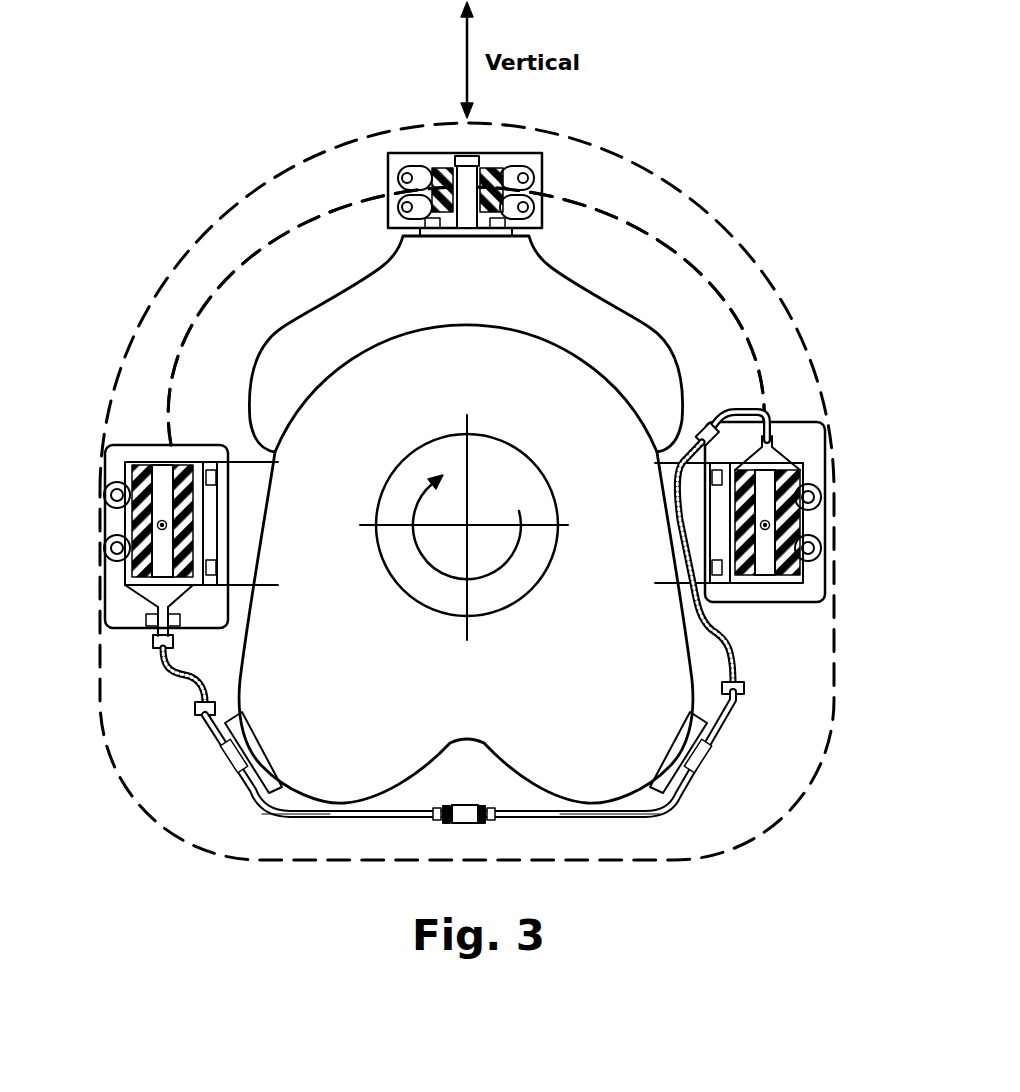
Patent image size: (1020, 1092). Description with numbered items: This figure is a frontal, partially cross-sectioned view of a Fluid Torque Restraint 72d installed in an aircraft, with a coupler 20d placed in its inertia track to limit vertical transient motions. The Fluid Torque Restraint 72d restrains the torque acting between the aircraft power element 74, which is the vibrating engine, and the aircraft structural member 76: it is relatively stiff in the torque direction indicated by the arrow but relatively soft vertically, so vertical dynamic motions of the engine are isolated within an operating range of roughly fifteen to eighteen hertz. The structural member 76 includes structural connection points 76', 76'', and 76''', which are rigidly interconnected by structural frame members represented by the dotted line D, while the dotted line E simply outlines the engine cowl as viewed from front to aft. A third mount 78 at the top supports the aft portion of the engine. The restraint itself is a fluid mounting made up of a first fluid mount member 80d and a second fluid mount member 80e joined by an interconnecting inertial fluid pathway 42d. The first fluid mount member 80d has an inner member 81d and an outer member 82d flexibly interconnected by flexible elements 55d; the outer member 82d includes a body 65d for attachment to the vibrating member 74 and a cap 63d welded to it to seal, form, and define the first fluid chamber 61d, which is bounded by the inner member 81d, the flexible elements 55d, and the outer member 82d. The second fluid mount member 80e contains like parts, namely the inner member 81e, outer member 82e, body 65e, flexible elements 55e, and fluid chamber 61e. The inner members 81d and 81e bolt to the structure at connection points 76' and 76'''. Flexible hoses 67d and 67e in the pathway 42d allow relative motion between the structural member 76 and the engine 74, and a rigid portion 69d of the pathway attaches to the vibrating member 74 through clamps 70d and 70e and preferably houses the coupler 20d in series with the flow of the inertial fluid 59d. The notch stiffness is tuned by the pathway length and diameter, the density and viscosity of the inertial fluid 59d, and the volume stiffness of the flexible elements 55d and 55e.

The coupler 20d is at (503, 829).
The inertial fluid pathway 42d is at (603, 823).
The flexible elements 55d is at (128, 556).
The flexible elements 55e is at (815, 548).
The inertial fluid 59d is at (140, 585).
The first fluid chamber 61d is at (150, 610).
The fluid chamber 61e is at (790, 460).
The cap 63d is at (135, 598).
The body 65d is at (132, 520).
The body 65e is at (805, 520).
The flexible hose 67d is at (175, 678).
The flexible hose 67e is at (738, 655).
The rigid portion 69d is at (418, 822).
The clamp 70d is at (232, 768).
The clamp 70e is at (705, 765).
The Fluid Torque Restraint 72d is at (282, 823).
The aircraft power element 74 is at (597, 719).
The aircraft structural member 76 is at (480, 308).
The structural connection point 76' is at (158, 527).
The structural connection point 76'' is at (452, 152).
The structural connection point 76''' is at (772, 534).
The third mount 78 is at (548, 156).
The first fluid mount member 80d is at (126, 603).
The second fluid mount member 80e is at (777, 590).
The inner member 81d is at (162, 472).
The inner member 81e is at (790, 485).
The outer member 82d is at (112, 483).
The outer member 82e is at (822, 586).
The dotted line D is at (215, 290).
The dotted line E is at (797, 800).